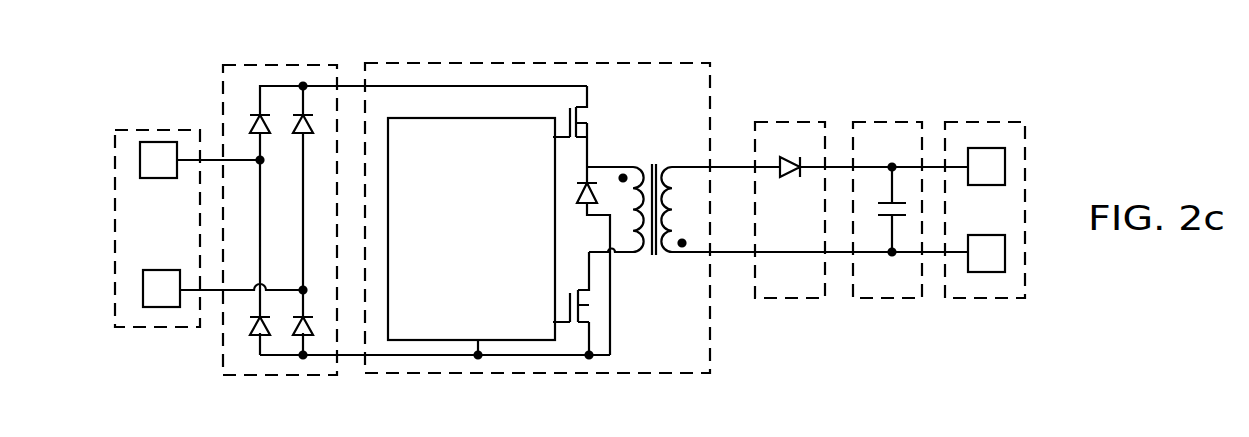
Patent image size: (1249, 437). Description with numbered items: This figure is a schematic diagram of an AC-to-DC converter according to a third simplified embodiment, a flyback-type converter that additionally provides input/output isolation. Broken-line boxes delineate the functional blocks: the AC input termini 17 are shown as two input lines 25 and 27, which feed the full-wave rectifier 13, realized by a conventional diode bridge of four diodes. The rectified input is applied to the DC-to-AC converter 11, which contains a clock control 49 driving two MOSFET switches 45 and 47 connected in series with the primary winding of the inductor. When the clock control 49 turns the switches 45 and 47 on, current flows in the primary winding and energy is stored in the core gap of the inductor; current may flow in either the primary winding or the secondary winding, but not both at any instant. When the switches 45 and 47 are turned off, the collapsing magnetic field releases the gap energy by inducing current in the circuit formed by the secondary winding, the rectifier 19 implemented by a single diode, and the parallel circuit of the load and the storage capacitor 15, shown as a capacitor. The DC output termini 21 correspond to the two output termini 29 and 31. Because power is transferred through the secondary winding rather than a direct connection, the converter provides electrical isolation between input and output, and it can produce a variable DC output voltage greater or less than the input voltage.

The DC-to-AC converter 11 is at (665, 61).
The full-wave rectifier 13 is at (298, 64).
The storage capacitor 15 is at (883, 121).
The AC input termini 17 is at (158, 129).
The rectifier 19 is at (790, 121).
The DC output termini 21 is at (983, 121).
The input line 25 is at (163, 179).
The input line 27 is at (170, 250).
The output terminus 29 is at (987, 186).
The output terminus 31 is at (995, 272).
The MOSFET switch 45 is at (589, 305).
The MOSFET switch 47 is at (567, 115).
The clock control 49 is at (483, 272).